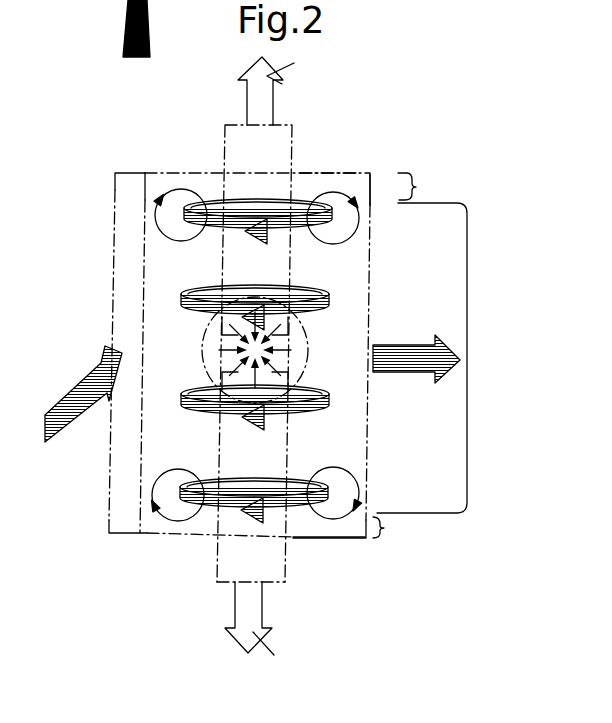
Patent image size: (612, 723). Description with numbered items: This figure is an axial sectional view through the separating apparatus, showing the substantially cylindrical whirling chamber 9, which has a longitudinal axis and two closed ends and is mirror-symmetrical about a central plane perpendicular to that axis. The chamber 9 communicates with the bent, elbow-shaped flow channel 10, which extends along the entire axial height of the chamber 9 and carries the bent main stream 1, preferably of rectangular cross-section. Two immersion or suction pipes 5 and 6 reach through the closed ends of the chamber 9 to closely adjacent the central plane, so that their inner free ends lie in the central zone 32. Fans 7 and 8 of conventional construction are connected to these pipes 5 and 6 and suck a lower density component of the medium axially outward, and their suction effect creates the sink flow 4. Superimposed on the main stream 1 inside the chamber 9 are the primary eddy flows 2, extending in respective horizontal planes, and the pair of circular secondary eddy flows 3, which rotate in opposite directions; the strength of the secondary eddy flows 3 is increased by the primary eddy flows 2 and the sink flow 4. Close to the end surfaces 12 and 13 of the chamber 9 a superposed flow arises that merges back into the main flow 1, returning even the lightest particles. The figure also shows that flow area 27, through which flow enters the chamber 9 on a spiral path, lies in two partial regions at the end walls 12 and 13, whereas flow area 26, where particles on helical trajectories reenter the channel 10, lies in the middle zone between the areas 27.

The main stream 1 is at (73, 392).
The primary eddy flows 2 is at (316, 292).
The secondary eddy flows 3 is at (155, 214).
The sink flow 4 is at (243, 340).
The immersion pipe 5 is at (226, 128).
The immersion pipe 6 is at (216, 571).
The fan 7 is at (273, 100).
The fan 8 is at (262, 612).
The whirling chamber 9 is at (372, 187).
The flow channel 10 is at (130, 268).
The end surface 12 is at (331, 174).
The end surface 13 is at (329, 539).
The flow area 26 is at (467, 338).
The flow area 27 is at (416, 187).
The central zone 32 is at (308, 360).